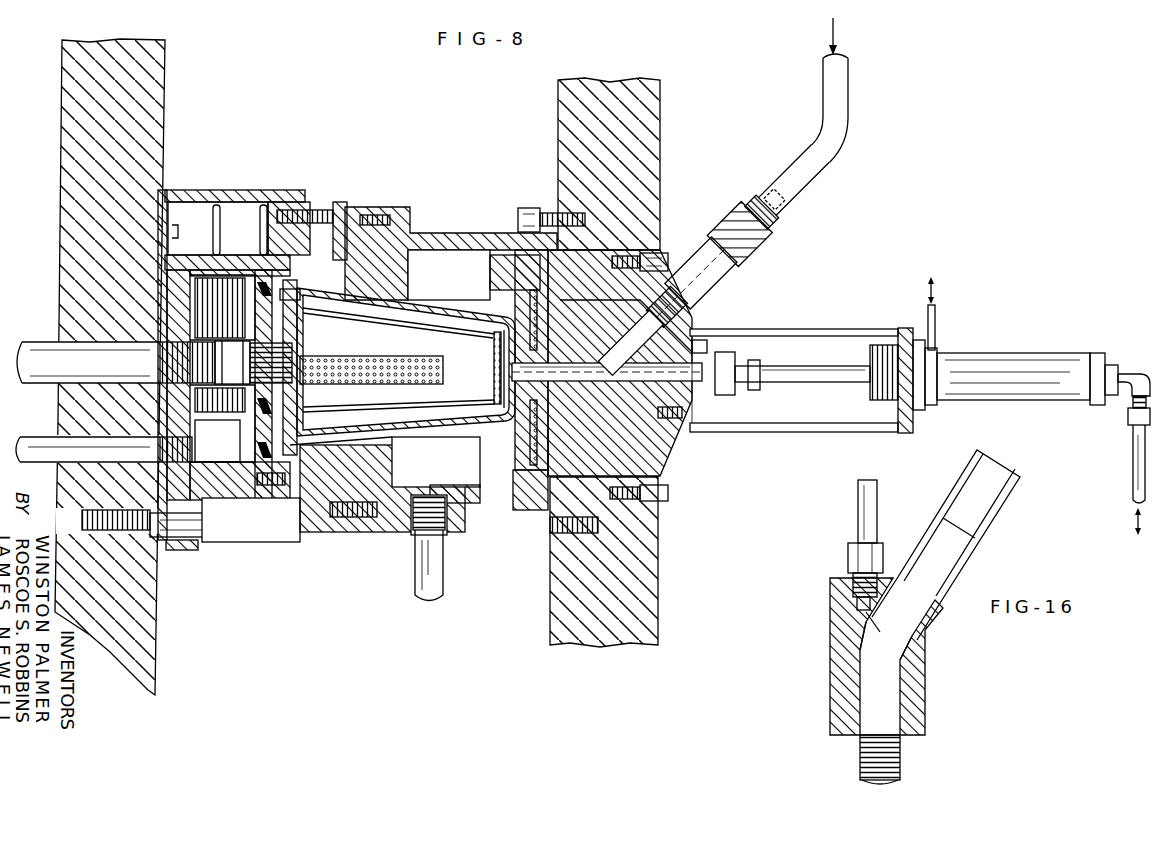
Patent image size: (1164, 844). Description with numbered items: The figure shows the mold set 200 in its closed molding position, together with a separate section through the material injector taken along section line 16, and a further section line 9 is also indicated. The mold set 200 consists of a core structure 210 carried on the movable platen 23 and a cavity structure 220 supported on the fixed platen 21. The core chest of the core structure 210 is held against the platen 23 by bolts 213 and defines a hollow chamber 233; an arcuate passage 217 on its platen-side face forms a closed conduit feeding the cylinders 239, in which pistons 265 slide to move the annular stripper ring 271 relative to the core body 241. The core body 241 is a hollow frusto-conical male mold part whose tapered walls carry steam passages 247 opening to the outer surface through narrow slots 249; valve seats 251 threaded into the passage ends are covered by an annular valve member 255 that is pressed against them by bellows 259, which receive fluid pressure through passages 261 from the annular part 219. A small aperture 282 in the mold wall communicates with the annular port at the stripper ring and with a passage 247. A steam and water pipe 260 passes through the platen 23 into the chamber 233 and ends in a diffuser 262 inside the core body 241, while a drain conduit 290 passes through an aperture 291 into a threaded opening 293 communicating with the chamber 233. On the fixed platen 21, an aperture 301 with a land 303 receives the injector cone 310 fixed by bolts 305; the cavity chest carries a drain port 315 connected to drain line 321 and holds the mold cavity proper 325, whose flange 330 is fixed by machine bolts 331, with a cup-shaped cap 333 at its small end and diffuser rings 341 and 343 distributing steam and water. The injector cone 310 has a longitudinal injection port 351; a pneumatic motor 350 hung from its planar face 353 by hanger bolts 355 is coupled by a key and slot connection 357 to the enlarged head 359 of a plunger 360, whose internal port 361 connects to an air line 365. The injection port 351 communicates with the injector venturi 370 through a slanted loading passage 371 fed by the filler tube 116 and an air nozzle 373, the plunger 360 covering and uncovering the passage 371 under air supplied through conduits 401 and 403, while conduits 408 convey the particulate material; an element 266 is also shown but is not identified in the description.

In FIG. 8, the section line 9- 9 is at (168, 178).
In FIG. 8, the section line 16 is at (782, 193).
In FIG. 8, the fixed platen 21 is at (647, 582).
In FIG. 8, the movable platen 23 is at (158, 637).
In FIG. 8, the filler tube 116 is at (845, 102).
In FIG. 16, the filler tube 116 is at (1000, 518).
In FIG. 8, the mold set 200 is at (458, 200).
In FIG. 8, the core structure 210 is at (286, 546).
In FIG. 8, the bolts 213 is at (215, 527).
In FIG. 8, the arcuate passage 217 is at (173, 227).
In FIG. 8, the annular part 219 is at (160, 297).
In FIG. 8, the cavity structure 220 is at (372, 535).
In FIG. 8, the hollow chamber 233 is at (218, 441).
In FIG. 8, the cylinders 239 is at (218, 228).
In FIG. 8, the core body 241 is at (380, 318).
In FIG. 8, the steam passages 247 is at (443, 320).
In FIG. 8, the narrow slots 249 is at (480, 317).
In FIG. 8, the valve seats 251 is at (290, 305).
In FIG. 8, the annular valve member 255 is at (265, 423).
In FIG. 8, the bellows 259 is at (220, 345).
In FIG. 8, the steam and water pipe 260 is at (128, 360).
In FIG. 8, the passages 261 is at (160, 275).
In FIG. 8, the diffuser 262 is at (418, 383).
In FIG. 8, the pistons 265 is at (280, 203).
In FIG. 8, the guide rod 266 is at (222, 213).
In FIG. 8, the annular stripper ring 271 is at (320, 213).
In FIG. 8, the small aperture 282 is at (332, 527).
In FIG. 8, the drain conduit 290 is at (40, 443).
In FIG. 8, the aperture 291 is at (117, 437).
In FIG. 8, the threaded opening 293 is at (175, 465).
In FIG. 8, the aperture 301 is at (598, 443).
In FIG. 8, the annular step or land 303 is at (640, 500).
In FIG. 8, the bolts 305 is at (665, 483).
In FIG. 8, the injector cone 310 is at (640, 435).
In FIG. 8, the port 315 is at (430, 503).
In FIG. 8, the drain line 321 is at (443, 567).
In FIG. 8, the mold cavity proper 325 is at (415, 442).
In FIG. 8, the circumferential flange 330 is at (348, 214).
In FIG. 8, the machine bolts 331 is at (363, 210).
In FIG. 8, the cup-shaped cap 333 is at (562, 520).
In FIG. 8, the diffuser ring 341 is at (400, 282).
In FIG. 8, the diffuser ring 343 is at (515, 272).
In FIG. 8, the pneumatic motor 350 is at (1012, 360).
In FIG. 8, the injection port 351 is at (607, 385).
In FIG. 8, the flat planar face 353 is at (683, 433).
In FIG. 8, the hanger bolts 355 is at (807, 329).
In FIG. 8, the key and slot connection 357 is at (737, 337).
In FIG. 8, the enlarged head 359 is at (722, 403).
In FIG. 8, the plunger 360 is at (640, 390).
In FIG. 8, the internal port 361 is at (727, 267).
In FIG. 8, the air line 365 is at (725, 310).
In FIG. 8, the injector venturi 370 is at (715, 238).
In FIG. 16, the injector venturi 370 is at (918, 688).
In FIG. 8, the slanted loading passage 371 is at (610, 318).
In FIG. 16, the slanted loading passage 371 is at (887, 678).
In FIG. 8, the air nozzle 373 is at (630, 273).
In FIG. 16, the air nozzle 373 is at (868, 620).
In FIG. 8, the conduit 401 is at (935, 332).
In FIG. 8, the conduit 403 is at (1128, 480).
In FIG. 16, the conduits 408 is at (873, 532).